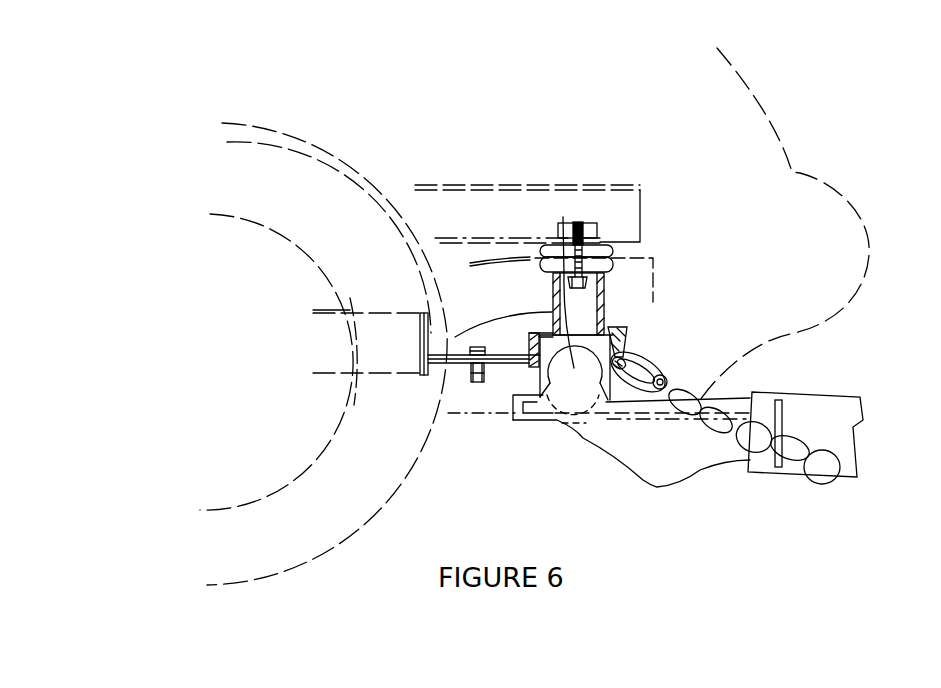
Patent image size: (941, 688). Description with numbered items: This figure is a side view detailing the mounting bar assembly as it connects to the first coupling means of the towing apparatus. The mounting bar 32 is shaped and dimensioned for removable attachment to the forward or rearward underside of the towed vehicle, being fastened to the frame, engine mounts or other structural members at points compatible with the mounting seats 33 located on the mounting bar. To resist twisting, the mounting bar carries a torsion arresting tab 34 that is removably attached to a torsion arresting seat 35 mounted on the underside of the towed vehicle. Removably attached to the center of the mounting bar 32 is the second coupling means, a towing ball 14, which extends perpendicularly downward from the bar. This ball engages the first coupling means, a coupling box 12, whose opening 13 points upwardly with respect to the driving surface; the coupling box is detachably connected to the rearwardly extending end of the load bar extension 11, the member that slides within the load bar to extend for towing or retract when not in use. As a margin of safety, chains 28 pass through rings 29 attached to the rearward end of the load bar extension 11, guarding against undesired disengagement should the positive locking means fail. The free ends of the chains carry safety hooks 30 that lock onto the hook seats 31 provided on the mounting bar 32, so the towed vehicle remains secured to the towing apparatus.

The load bar extension 11 is at (793, 392).
The coupling box 12 is at (660, 487).
The opening 13 is at (588, 425).
The towing ball 14 is at (556, 320).
The chains 28 is at (722, 432).
The rings 29 is at (782, 422).
The safety hooks 30 is at (660, 372).
The hook seats 31 is at (605, 312).
The mounting bar 32 is at (614, 327).
The mounting seats 33 is at (563, 217).
The torsion arresting tab 34 is at (506, 408).
The torsion arresting seat 35 is at (428, 410).